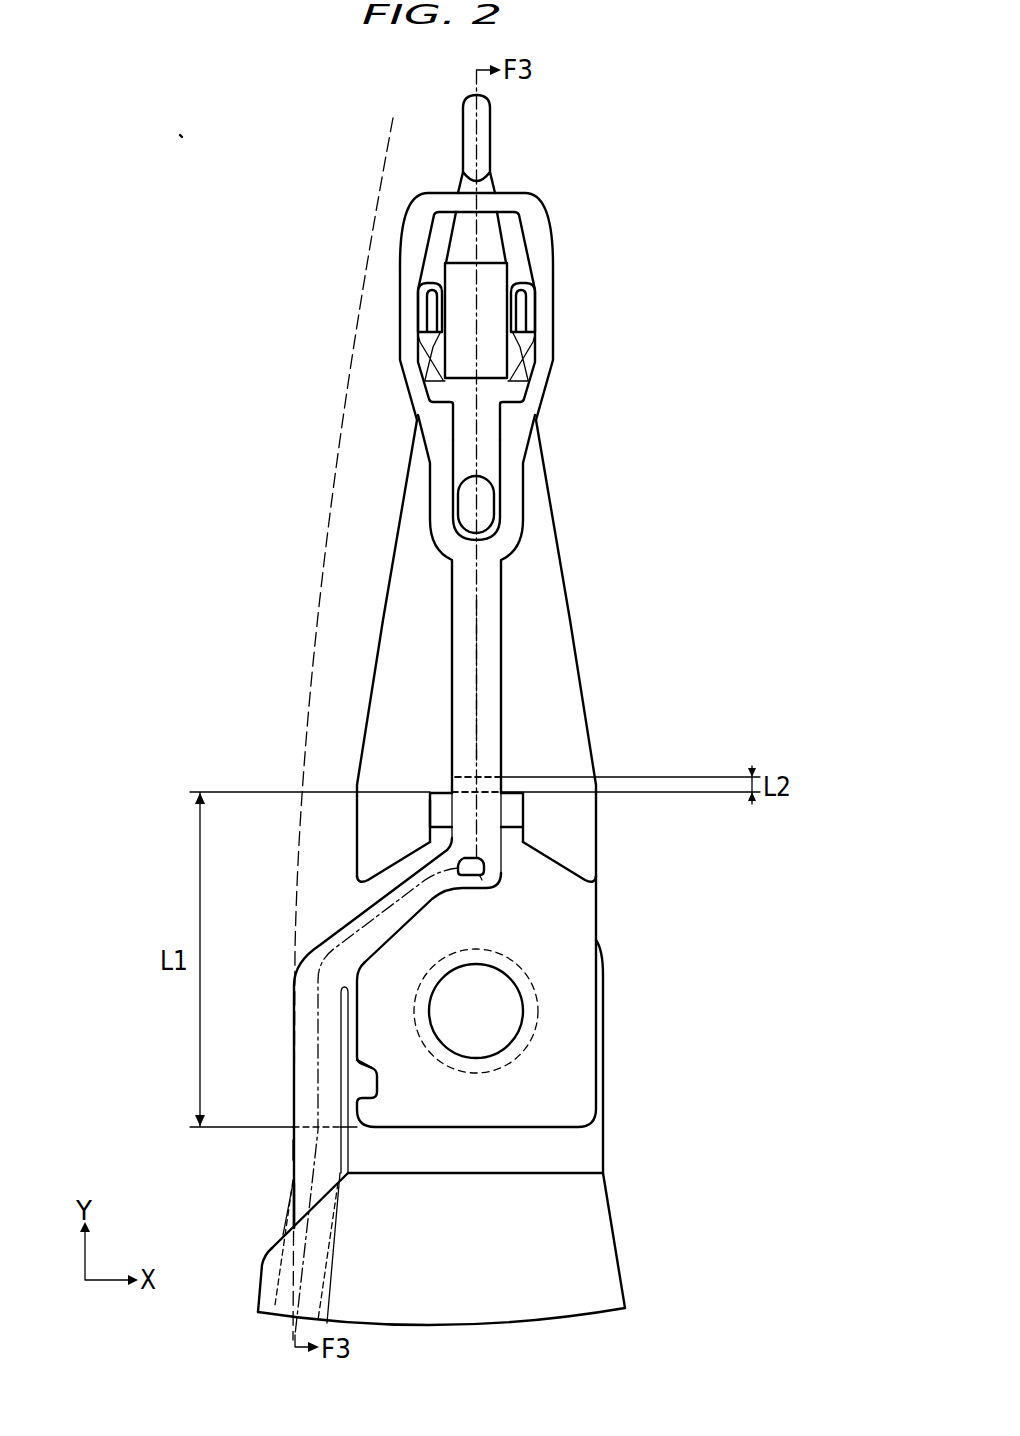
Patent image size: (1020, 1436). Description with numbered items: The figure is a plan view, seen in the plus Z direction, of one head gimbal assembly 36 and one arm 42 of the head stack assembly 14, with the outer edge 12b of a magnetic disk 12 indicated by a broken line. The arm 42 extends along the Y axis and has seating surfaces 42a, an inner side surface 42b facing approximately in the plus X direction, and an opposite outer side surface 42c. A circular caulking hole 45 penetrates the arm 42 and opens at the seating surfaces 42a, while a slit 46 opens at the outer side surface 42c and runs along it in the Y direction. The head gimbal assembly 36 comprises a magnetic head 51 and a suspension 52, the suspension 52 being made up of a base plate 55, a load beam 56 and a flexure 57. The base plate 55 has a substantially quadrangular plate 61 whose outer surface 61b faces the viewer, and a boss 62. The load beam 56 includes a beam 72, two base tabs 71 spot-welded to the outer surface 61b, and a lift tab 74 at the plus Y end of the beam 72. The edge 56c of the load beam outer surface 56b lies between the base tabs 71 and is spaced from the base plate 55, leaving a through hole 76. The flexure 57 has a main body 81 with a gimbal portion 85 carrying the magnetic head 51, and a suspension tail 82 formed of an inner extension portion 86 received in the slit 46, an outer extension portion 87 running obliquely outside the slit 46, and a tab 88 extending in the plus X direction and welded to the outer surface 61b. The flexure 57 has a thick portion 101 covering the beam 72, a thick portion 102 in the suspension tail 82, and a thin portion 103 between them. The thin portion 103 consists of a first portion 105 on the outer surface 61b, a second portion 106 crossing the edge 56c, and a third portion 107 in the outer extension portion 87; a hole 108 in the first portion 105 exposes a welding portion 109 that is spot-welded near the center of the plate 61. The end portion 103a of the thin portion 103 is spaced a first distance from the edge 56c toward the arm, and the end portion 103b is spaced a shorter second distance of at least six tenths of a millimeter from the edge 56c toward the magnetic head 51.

The HSA 14 is at (176, 133).
The magnetic disk 12 is at (318, 729).
The outer edge 12b is at (346, 342).
The lift tab 74 is at (481, 137).
The magnetic head 51 is at (498, 275).
The gimbal portion 85 is at (554, 325).
The head gimbal assembly 36 is at (515, 535).
The suspension 52 is at (561, 525).
The load beam 56 is at (495, 547).
The outer surface 56b is at (495, 547).
The beam 72 is at (546, 585).
The thick portion 101 is at (498, 628).
The flexure 57 is at (580, 716).
The main body 81 is at (507, 666).
The end portion 103b is at (457, 781).
The thin portion 103 is at (597, 760).
The second portion 106 is at (493, 778).
The through hole 76 is at (426, 816).
The edge 56c is at (521, 815).
The base tab 71 is at (373, 862).
The first portion 105 is at (391, 895).
The welding portion 109 is at (491, 869).
The base plate 55 is at (584, 902).
The plate 61 is at (539, 1000).
The outer surface 61b is at (581, 922).
The third portion 107 is at (318, 982).
The hole 108 is at (483, 882).
The boss 62 is at (529, 985).
The caulking hole 45 is at (528, 1015).
The outer extension portion 87 is at (300, 1034).
The tab 88 is at (361, 1080).
The seating surface 42a is at (586, 1139).
The end portion 103a is at (293, 1148).
The suspension tail 82 is at (293, 1165).
The thick portion 102 is at (297, 1196).
The arm 42 is at (613, 1190).
The inner side surface 42b is at (621, 1258).
The slit 46 is at (260, 1265).
The outer side surface 42c is at (262, 1278).
The inner extension portion 86 is at (262, 1303).